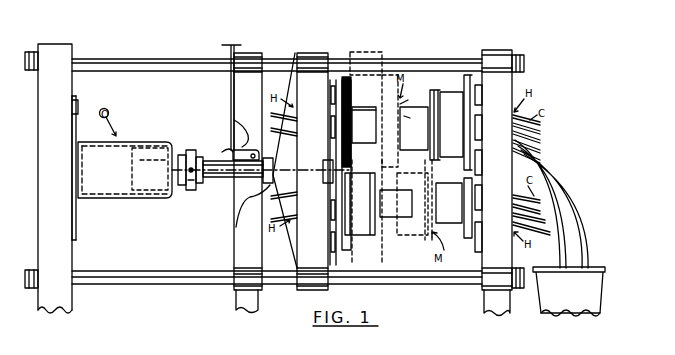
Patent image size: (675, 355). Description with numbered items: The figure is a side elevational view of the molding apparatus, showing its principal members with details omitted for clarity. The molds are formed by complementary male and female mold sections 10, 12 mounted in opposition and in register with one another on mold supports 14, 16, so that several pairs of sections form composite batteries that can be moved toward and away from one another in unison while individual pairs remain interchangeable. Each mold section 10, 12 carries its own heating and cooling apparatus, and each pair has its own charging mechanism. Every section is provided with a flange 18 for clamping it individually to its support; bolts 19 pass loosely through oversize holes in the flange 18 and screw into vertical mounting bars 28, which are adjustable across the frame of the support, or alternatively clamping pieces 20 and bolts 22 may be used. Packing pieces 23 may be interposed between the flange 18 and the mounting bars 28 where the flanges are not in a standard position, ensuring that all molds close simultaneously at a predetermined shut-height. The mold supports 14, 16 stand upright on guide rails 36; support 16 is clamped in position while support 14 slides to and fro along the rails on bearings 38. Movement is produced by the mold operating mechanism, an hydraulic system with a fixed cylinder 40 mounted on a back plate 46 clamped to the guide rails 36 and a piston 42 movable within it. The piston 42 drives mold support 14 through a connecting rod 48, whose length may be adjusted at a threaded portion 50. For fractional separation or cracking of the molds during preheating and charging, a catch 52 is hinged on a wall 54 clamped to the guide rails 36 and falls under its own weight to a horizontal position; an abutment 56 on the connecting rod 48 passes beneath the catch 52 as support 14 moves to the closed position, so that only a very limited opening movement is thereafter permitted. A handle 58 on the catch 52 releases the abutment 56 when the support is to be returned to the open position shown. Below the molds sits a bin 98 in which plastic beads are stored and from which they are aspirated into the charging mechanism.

The male mold section 10 is at (368, 109).
The female mold section 12 is at (410, 100).
The mold support 14 is at (314, 91).
The mold support 16 is at (496, 92).
The flange 18 is at (335, 94).
The bolts 19 is at (360, 236).
The clamping pieces 20 is at (462, 172).
The bolts 22 is at (462, 162).
The packing pieces 23 is at (448, 92).
The mounting bars 28 is at (330, 137).
The guide rails 36 is at (155, 58).
The bearings 38 is at (297, 48).
The cylinder 40 is at (123, 202).
The piston 42 is at (136, 148).
The back plate 46 is at (81, 107).
The connecting rod 48 is at (220, 178).
The threaded portion 50 is at (186, 152).
The catch 52 is at (223, 150).
The wall 54 is at (236, 232).
The abutment 56 is at (192, 192).
The handle 58 is at (226, 44).
The bin 98 is at (542, 304).